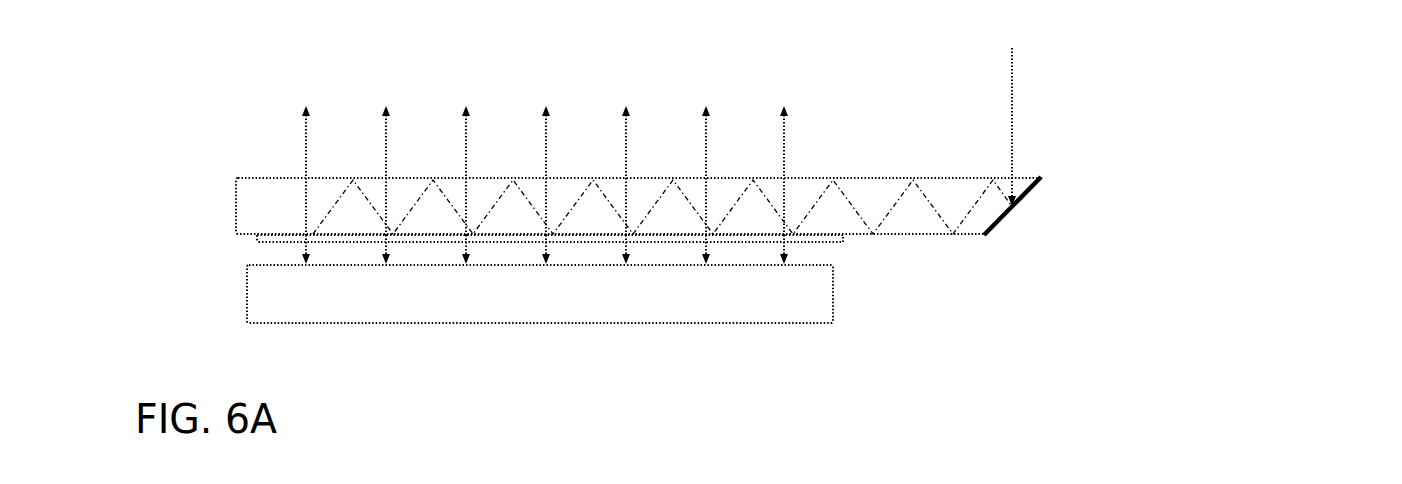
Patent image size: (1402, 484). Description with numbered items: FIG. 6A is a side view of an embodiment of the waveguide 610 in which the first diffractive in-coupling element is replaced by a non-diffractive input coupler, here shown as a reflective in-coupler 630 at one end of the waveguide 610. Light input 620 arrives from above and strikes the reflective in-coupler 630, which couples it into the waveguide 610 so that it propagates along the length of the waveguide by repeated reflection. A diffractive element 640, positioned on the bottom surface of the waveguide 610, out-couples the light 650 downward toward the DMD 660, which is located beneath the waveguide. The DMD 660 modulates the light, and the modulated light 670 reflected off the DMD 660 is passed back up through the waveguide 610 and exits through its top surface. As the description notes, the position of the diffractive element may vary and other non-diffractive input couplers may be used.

The waveguide 610 is at (256, 166).
The light 620 is at (1027, 70).
The reflective in-coupler 630 is at (1031, 212).
The diffractive element 640 is at (861, 245).
The light 650 is at (829, 257).
The DMD 660 is at (845, 326).
The modulated light 670 is at (723, 107).